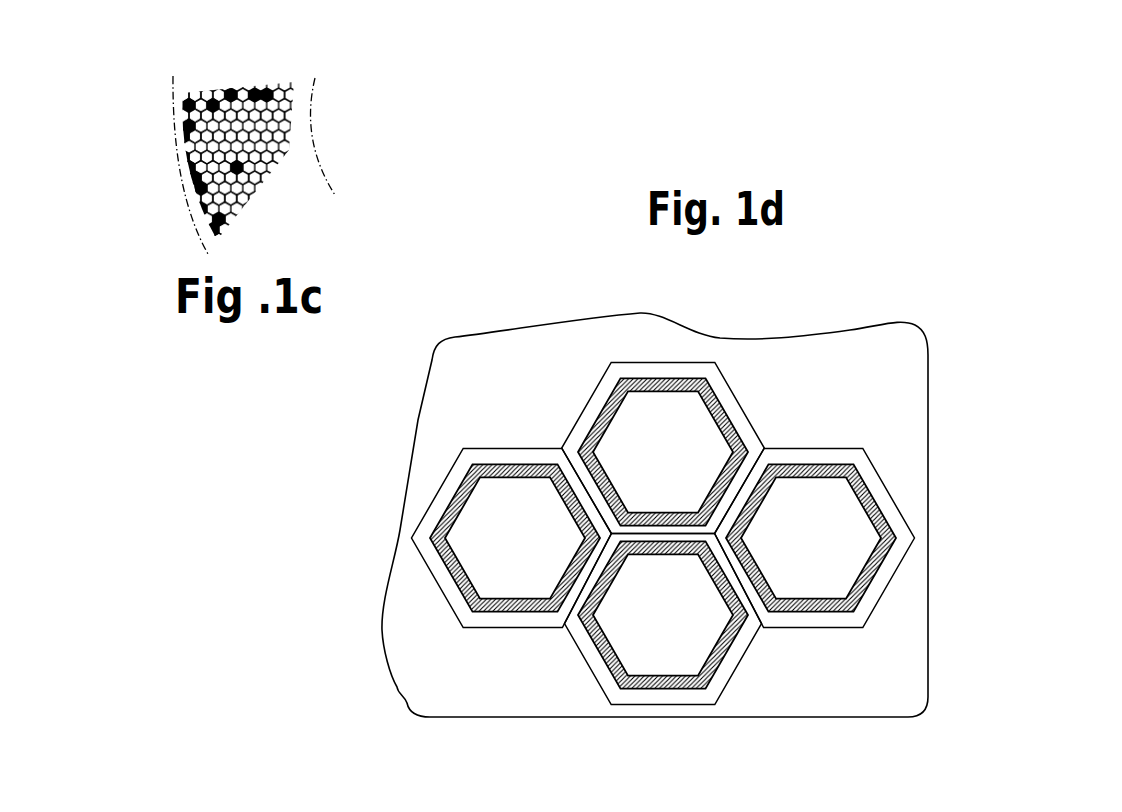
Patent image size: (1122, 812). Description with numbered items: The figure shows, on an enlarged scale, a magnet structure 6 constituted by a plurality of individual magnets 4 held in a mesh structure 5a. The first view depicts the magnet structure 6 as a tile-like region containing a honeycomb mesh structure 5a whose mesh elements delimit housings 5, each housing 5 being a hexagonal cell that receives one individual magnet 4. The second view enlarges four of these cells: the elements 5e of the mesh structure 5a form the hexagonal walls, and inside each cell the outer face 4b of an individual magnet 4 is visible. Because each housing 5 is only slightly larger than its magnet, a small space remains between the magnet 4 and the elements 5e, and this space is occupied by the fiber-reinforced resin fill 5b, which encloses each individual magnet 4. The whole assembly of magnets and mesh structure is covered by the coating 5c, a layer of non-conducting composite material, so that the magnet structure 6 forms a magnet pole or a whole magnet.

In FIG. 1c, the individual magnet 4 is at (183, 130).
In FIG. 1d, the individual magnet 4 is at (612, 579).
In FIG. 1c, the housing 5 is at (182, 88).
In FIG. 1c, the magnet structure 6 is at (118, 228).
In FIG. 1d, the outer face 4b is at (530, 555).
In FIG. 1d, the mesh structure 5a is at (427, 475).
In FIG. 1d, the fiber-reinforced resin fill 5b is at (453, 593).
In FIG. 1d, the coating 5c is at (425, 393).
In FIG. 1d, the mesh structure element 5e is at (583, 410).